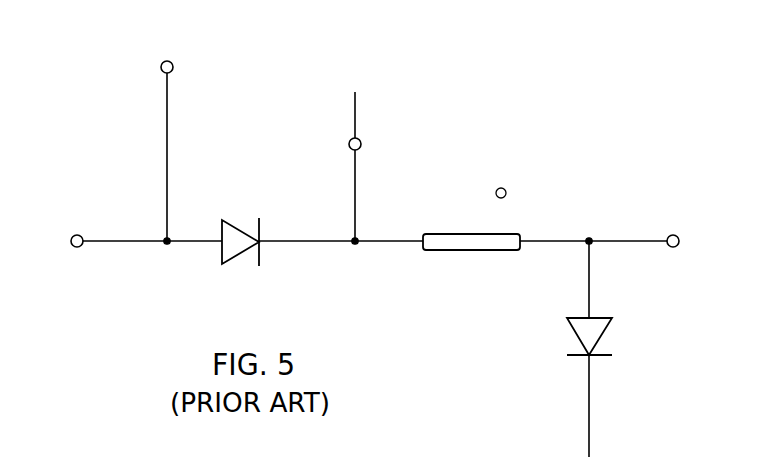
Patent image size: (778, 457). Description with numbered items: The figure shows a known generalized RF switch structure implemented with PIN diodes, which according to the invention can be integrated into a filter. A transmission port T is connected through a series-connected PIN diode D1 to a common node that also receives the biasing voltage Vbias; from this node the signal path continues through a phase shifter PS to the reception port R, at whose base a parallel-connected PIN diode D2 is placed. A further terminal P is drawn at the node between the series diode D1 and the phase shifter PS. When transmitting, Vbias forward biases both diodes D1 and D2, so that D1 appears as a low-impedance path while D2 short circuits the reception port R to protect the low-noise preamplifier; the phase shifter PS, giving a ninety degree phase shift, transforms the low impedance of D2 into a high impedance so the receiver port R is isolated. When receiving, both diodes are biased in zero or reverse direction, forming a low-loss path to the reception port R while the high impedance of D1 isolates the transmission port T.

The transmission port T is at (71, 241).
The biasing voltage Vbias is at (181, 124).
The series-connected PIN diode D1 is at (242, 258).
The port terminal P is at (362, 143).
The phase shifter PS is at (478, 253).
The reception port R is at (680, 242).
The parallel-connected PIN diode D2 is at (598, 341).